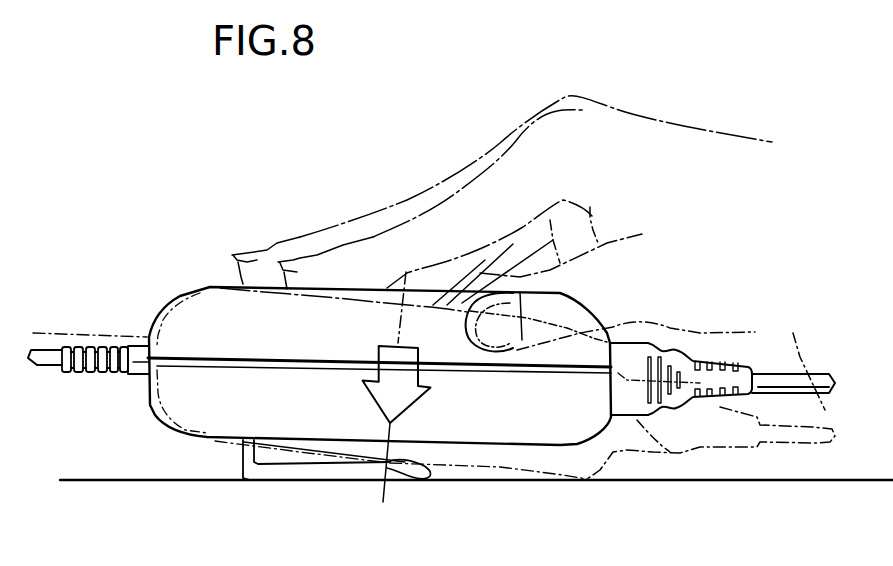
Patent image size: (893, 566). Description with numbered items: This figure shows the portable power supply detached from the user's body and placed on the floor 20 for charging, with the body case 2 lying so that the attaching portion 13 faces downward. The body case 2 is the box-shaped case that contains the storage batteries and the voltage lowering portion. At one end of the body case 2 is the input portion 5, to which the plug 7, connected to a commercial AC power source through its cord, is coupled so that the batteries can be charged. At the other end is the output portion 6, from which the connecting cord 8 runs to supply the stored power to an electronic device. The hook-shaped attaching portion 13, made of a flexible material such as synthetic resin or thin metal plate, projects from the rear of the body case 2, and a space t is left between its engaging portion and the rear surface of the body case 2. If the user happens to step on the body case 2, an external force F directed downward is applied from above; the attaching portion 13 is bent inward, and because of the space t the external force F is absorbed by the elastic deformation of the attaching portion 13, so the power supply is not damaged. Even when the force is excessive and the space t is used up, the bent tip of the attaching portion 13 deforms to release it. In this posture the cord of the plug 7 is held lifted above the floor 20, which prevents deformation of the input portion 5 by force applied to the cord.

The body case 2 is at (214, 297).
The input portion 5 is at (616, 383).
The output portion 6 is at (147, 377).
The plug 7 is at (808, 377).
The connecting cord 8 is at (50, 367).
The attaching portion 13 is at (347, 467).
The space t is at (403, 477).
The floor 20 is at (120, 478).
The external force F is at (405, 393).